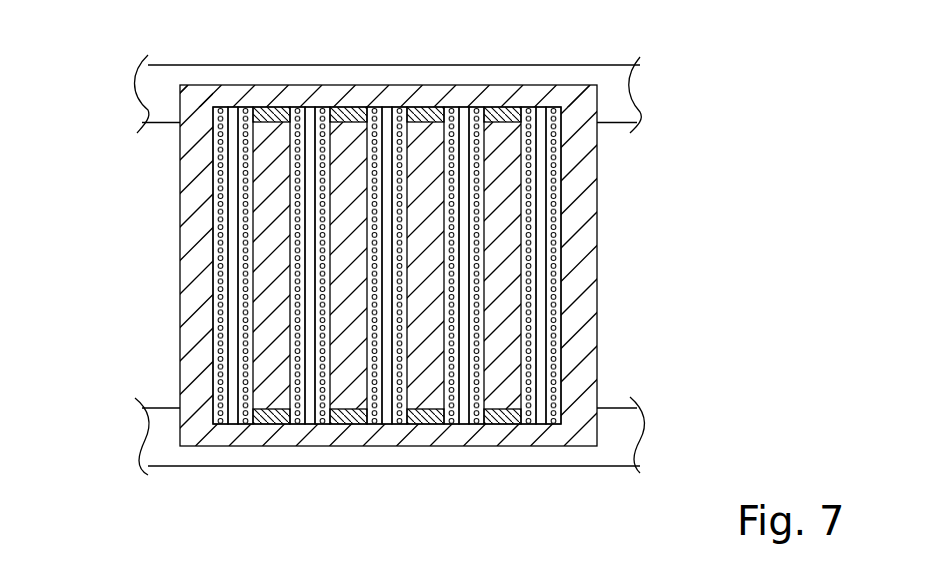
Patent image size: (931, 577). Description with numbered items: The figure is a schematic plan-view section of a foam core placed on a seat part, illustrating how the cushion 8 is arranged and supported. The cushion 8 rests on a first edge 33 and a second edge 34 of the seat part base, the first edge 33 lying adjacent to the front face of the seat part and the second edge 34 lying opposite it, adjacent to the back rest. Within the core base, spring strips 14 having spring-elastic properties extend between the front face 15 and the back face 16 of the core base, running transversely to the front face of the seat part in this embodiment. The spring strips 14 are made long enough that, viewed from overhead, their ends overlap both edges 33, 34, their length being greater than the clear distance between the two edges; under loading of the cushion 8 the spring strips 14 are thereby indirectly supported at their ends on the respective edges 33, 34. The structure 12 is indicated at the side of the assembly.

The cushion 8 is at (108, 324).
The cell stack 12 is at (630, 237).
The spring strips 14 is at (307, 420).
The front face 15 is at (385, 446).
The back face 16 is at (494, 86).
The first edge 33 is at (620, 442).
The second edge 34 is at (625, 98).